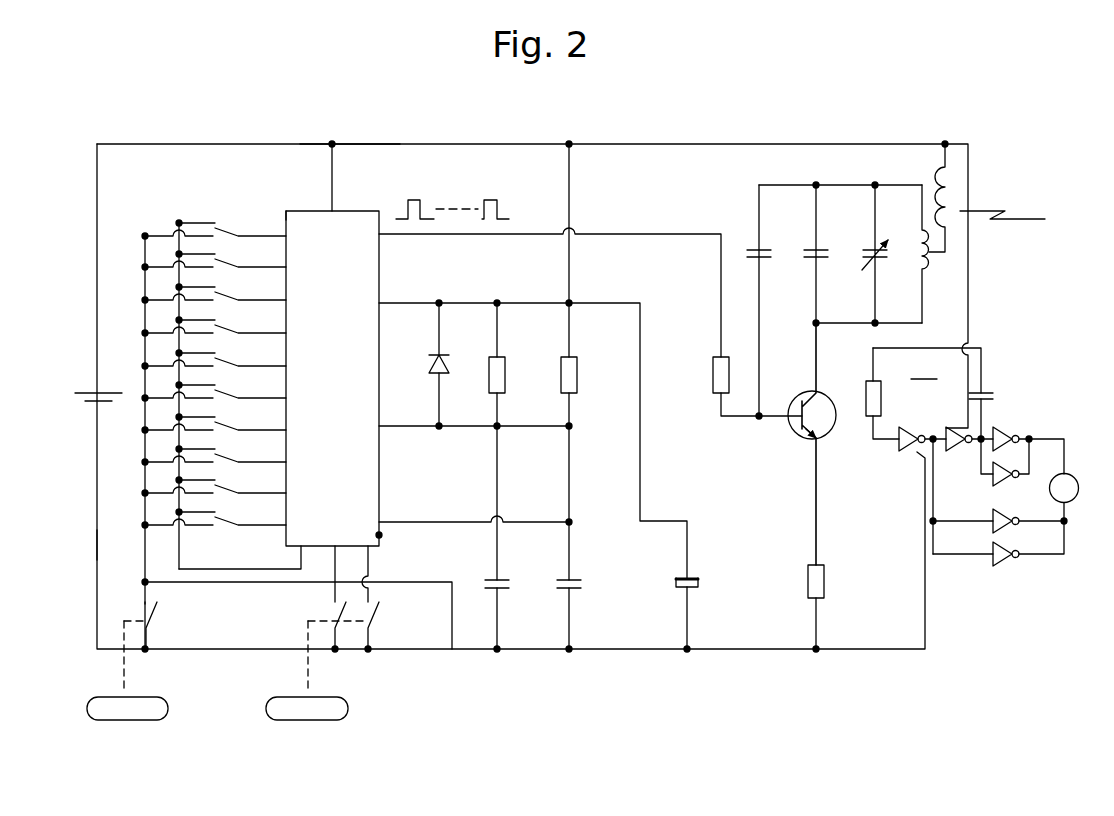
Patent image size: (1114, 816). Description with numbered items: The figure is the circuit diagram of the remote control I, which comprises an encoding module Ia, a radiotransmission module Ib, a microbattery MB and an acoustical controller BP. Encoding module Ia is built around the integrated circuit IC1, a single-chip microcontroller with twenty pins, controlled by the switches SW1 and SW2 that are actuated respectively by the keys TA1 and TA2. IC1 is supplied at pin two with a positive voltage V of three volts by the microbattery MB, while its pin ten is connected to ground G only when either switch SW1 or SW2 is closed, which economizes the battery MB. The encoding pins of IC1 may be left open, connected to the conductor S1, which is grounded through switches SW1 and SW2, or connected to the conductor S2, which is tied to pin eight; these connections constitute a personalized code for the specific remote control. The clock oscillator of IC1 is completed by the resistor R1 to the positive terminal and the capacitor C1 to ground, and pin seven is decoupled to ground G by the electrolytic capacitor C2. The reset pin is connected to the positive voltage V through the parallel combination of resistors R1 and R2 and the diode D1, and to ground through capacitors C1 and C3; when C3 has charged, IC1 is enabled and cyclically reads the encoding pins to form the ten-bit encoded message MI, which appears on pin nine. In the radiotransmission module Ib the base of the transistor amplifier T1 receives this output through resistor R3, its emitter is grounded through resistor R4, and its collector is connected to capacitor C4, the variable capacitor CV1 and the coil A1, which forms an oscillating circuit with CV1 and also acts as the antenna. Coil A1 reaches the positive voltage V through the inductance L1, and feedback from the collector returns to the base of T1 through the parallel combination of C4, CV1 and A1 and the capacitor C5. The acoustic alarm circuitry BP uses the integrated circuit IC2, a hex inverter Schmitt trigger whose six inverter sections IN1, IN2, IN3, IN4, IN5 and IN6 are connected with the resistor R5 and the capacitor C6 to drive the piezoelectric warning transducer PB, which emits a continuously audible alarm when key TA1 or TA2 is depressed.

The remote control I is at (204, 138).
The encoding module Ia is at (271, 206).
The radiotransmission module Ib is at (743, 448).
The positive voltage V is at (352, 144).
The encoded message MI is at (444, 199).
The microbattery MB is at (80, 401).
The ground G is at (98, 537).
The conductor S1 is at (145, 246).
The conductor S2 is at (228, 569).
The integrated circuit IC1 is at (334, 378).
The integrated circuit IC2 is at (951, 450).
The diode D1 is at (428, 371).
The resistor R1 is at (577, 375).
The resistor R2 is at (505, 375).
The resistor R3 is at (713, 375).
The resistor R4 is at (826, 582).
The resistor R5 is at (881, 402).
The capacitor C1 is at (574, 580).
The electrolytic capacitor C2 is at (693, 578).
The capacitor C3 is at (502, 580).
The capacitor C4 is at (830, 257).
The capacitor C5 is at (770, 257).
The capacitor C6 is at (983, 392).
The variable capacitor CV1 is at (882, 260).
The coil A1 is at (930, 265).
The inductance L1 is at (952, 182).
The transistor amplifier T1 is at (792, 438).
The inverter IN1 is at (899, 450).
The inverter IN2 is at (949, 428).
The inverter IN3 is at (1005, 427).
The inverter IN4 is at (993, 480).
The inverter IN5 is at (1003, 510).
The inverter IN6 is at (993, 565).
The acoustical warning transducer PB is at (1072, 498).
The acoustical controller BP is at (1038, 426).
The switch SW1 is at (148, 628).
The switch SW2 is at (372, 628).
The key TA1 is at (127, 670).
The key TA2 is at (307, 670).